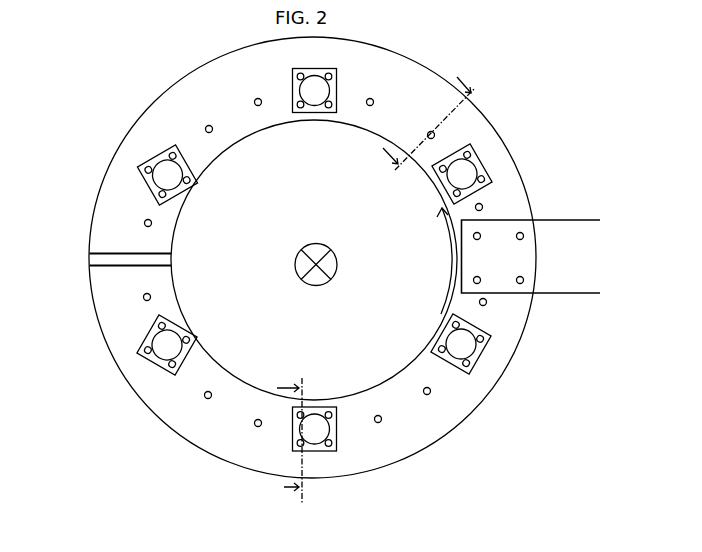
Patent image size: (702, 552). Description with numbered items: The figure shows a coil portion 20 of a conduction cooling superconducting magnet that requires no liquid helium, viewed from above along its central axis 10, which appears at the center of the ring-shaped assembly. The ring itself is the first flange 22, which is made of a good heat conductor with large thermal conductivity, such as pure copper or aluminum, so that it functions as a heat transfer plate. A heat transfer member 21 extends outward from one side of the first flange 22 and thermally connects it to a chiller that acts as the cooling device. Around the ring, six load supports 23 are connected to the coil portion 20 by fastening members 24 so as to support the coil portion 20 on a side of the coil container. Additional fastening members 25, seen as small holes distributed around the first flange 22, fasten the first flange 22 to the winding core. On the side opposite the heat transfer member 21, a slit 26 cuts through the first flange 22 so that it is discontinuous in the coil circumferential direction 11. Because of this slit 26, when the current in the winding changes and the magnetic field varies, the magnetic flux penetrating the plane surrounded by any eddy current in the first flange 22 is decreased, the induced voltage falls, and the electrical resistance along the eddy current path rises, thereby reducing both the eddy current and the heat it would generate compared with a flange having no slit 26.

The central axis 10 is at (306, 256).
The coil circumferential direction 11 is at (439, 261).
The coil portion 20 is at (100, 142).
The heat transfer member 21 is at (550, 238).
The first flange 22 is at (455, 394).
The load support 23 is at (483, 342).
The fastening member 24 is at (462, 348).
The fastening member 25 is at (381, 422).
The slit 26 is at (93, 263).